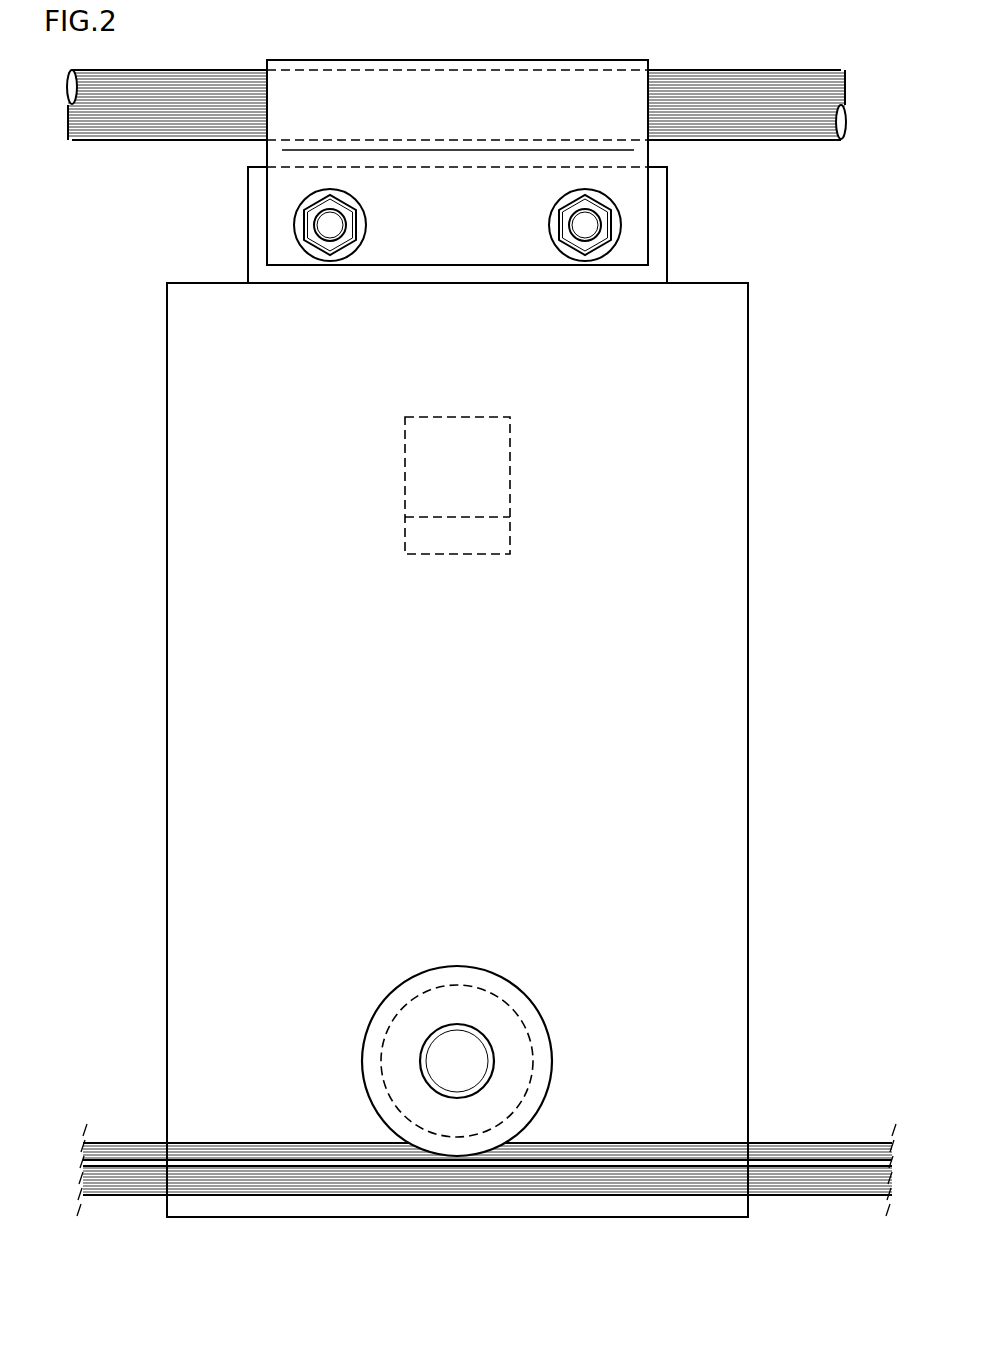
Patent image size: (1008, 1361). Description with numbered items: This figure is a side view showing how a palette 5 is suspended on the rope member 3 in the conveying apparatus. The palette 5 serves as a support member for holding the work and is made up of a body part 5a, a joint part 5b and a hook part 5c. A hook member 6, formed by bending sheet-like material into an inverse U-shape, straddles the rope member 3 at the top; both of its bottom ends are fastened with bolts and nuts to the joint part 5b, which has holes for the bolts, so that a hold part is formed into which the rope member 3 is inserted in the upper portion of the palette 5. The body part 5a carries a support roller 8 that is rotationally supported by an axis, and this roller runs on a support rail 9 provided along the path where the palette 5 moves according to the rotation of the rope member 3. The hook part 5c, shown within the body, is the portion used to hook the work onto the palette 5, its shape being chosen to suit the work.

The rope member 3 is at (165, 142).
The palette 5 is at (486, 692).
The body part 5a is at (728, 918).
The joint part 5b is at (667, 225).
The hook part 5c is at (510, 485).
The hook member 6 is at (453, 40).
The support roller 8 is at (455, 966).
The support rail 9 is at (791, 1143).